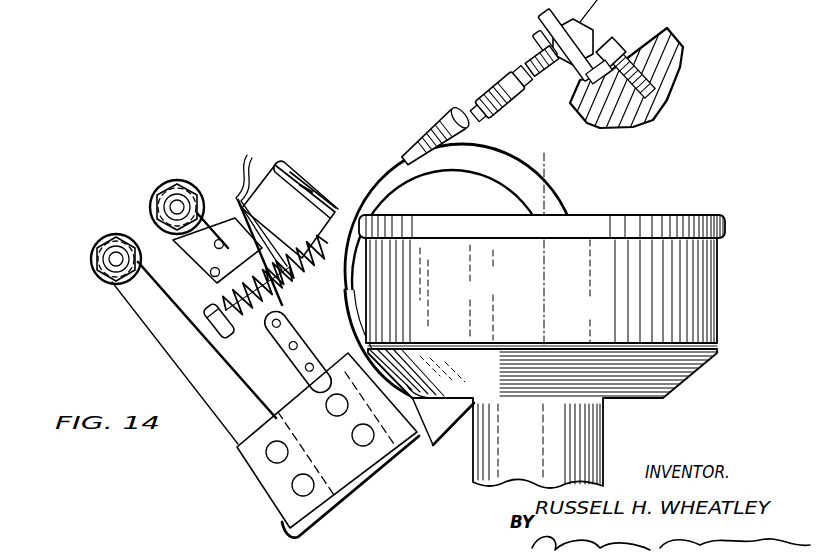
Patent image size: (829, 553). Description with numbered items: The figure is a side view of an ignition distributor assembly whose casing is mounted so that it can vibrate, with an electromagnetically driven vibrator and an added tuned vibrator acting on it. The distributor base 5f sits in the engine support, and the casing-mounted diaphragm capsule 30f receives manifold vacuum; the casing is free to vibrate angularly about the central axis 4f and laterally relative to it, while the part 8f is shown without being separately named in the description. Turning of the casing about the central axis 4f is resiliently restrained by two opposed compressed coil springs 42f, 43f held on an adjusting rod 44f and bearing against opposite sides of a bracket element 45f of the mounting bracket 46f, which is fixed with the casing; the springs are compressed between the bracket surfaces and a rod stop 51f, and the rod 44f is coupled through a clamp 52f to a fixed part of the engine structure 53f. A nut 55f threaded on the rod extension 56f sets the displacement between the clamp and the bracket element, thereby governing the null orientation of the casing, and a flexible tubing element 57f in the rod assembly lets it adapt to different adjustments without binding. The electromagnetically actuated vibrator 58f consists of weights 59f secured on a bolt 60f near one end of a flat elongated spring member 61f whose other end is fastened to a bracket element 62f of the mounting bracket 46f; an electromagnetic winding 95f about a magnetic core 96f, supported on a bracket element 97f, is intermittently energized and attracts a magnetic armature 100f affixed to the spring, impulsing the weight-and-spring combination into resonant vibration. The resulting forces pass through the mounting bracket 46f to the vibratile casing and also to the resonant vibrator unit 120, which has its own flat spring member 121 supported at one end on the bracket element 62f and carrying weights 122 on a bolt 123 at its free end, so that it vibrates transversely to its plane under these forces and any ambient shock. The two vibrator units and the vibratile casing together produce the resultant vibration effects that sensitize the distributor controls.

The resonant vibrator unit 120 is at (90, 196).
The electromagnetically actuated vibrator 58f is at (164, 150).
The weights 59f is at (183, 198).
The bolt 60f is at (168, 196).
The weights 122 is at (120, 241).
The bolt 123 is at (101, 261).
The magnetic core 96f is at (245, 212).
The bracket element 97f is at (305, 178).
The compressed coil spring 42f is at (337, 205).
The electromagnetic winding 95f is at (294, 215).
The magnetic armature 100f is at (245, 263).
The flat elongated spring member 61f is at (197, 243).
The compressed coil spring 43f is at (226, 304).
The flat spring member 121 is at (188, 329).
The rod stop 51f is at (226, 332).
The bracket element 45f is at (298, 276).
The adjusting rod 44f is at (266, 340).
The bracket element 62f is at (331, 444).
The mounting bracket 46f is at (433, 445).
The diaphragm capsule 30f is at (464, 204).
The drum 8f is at (520, 274).
The central axis 4f is at (480, 498).
The distributor base 5f is at (588, 440).
The nut 55f is at (546, 44).
The flexible tubing element 57f is at (485, 90).
The rod extension 56f is at (540, 70).
The clamp 52f is at (604, 60).
The engine structure 53f is at (636, 124).